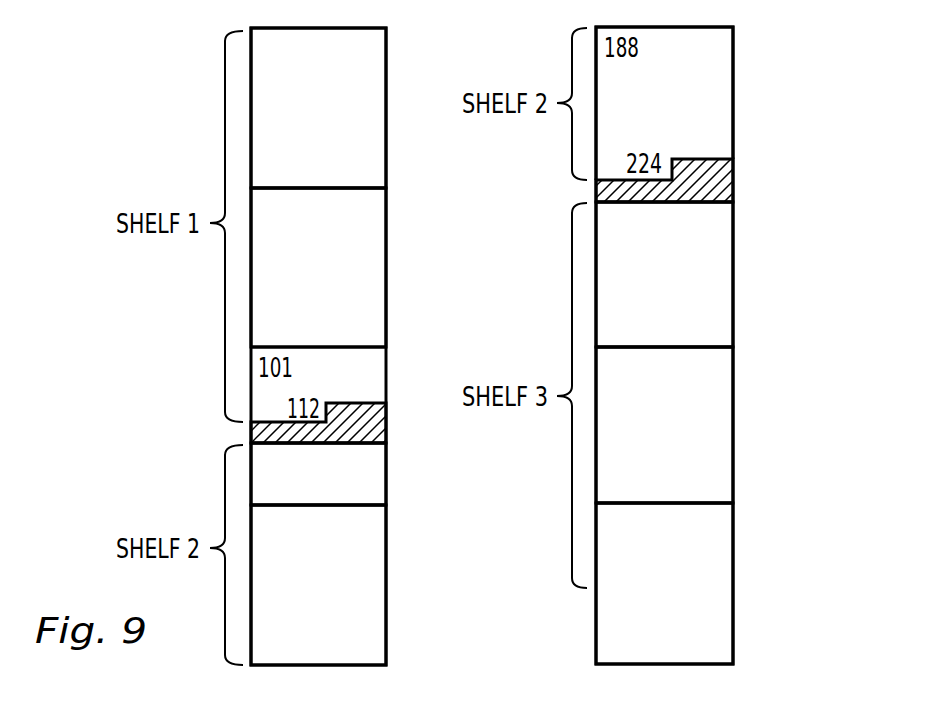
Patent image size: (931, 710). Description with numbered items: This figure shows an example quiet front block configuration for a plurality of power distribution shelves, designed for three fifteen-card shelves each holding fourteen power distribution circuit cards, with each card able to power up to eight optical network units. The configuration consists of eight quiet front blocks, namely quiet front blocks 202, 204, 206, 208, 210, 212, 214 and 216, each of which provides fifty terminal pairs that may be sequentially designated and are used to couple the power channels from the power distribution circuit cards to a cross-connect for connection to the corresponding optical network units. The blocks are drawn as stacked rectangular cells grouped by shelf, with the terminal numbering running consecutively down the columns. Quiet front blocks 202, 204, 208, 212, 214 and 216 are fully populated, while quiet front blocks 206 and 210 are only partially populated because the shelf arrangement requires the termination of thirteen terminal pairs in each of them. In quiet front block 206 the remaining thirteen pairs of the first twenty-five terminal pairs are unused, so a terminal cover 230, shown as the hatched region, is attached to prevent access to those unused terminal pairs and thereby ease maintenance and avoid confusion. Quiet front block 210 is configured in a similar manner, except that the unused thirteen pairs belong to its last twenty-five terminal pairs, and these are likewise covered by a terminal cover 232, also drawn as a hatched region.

The quiet front block 202 is at (380, 105).
The quiet front block 204 is at (380, 270).
The quiet front block 206 is at (377, 459).
The quiet front block 208 is at (380, 575).
The quiet front block 210 is at (723, 103).
The quiet front block 212 is at (723, 278).
The quiet front block 214 is at (723, 430).
The quiet front block 216 is at (722, 540).
The terminal cover 230 is at (383, 422).
The terminal cover 232 is at (728, 181).